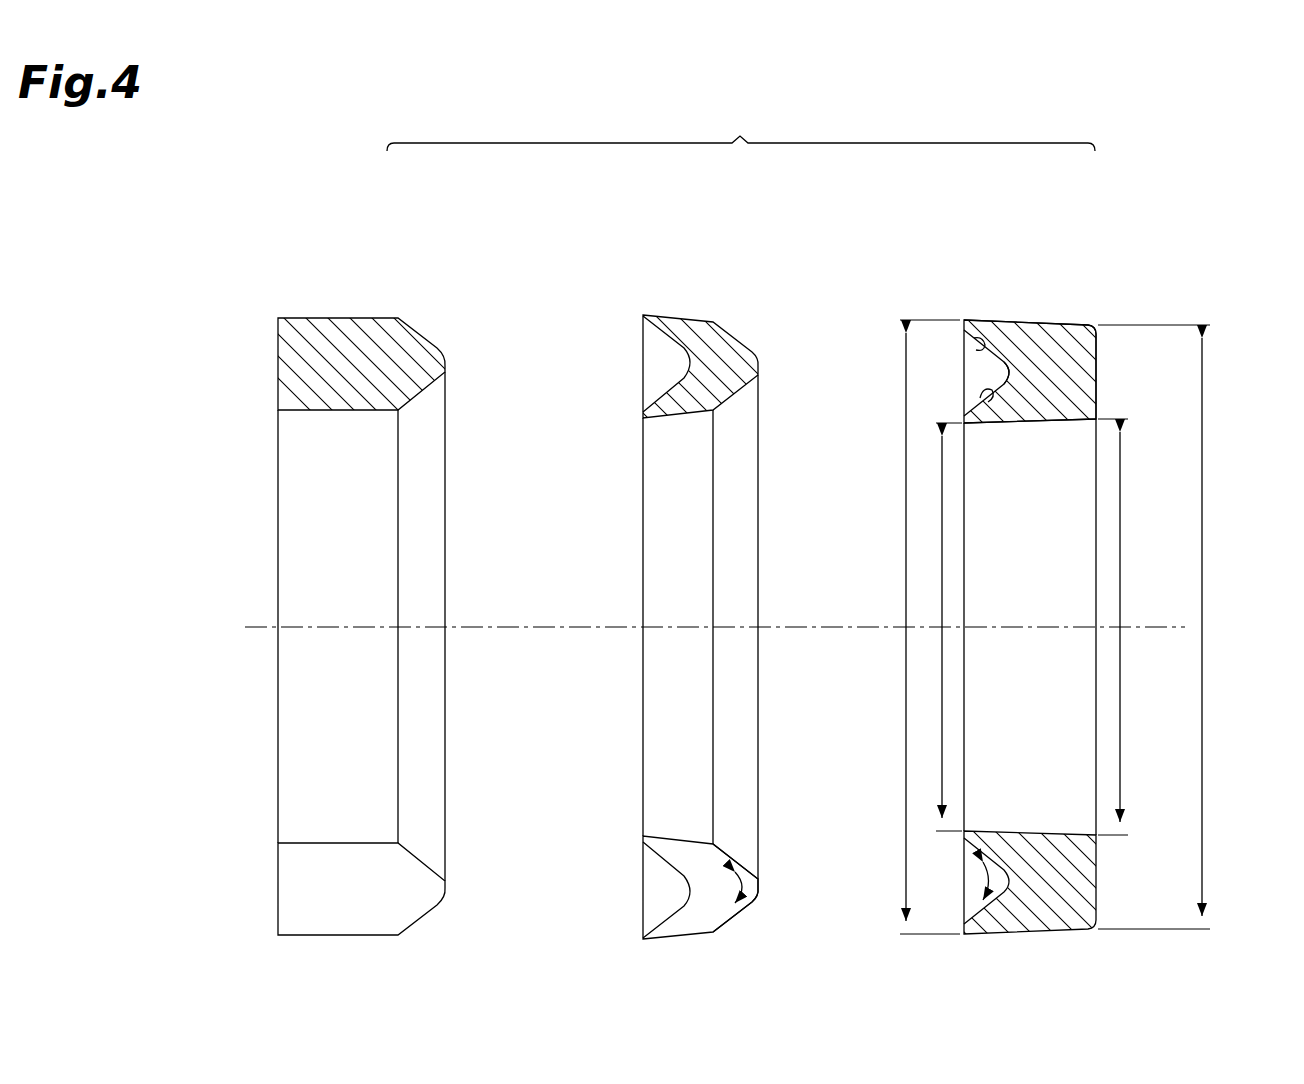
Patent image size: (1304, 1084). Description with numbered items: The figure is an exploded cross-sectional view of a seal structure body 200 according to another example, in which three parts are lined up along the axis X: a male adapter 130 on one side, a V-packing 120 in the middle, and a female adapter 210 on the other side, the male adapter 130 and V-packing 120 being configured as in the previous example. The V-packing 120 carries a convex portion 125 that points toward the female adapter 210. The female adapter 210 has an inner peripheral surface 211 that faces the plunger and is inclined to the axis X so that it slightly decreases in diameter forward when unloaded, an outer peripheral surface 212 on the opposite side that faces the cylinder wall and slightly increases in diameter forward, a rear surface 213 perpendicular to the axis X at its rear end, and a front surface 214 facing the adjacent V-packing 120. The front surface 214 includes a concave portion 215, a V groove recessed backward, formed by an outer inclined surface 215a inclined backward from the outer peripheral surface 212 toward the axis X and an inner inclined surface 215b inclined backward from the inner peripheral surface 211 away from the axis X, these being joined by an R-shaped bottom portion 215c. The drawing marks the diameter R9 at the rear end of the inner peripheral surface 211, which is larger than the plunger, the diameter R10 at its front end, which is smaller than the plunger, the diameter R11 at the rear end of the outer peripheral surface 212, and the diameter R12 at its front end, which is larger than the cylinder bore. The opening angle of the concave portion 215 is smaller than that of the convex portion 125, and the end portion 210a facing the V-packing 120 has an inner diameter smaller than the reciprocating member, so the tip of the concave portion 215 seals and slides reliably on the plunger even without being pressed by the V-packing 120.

The seal structure body 200 is at (741, 130).
The male adapter 130 is at (394, 222).
The V-packing 120 is at (728, 222).
The convex portion 125 is at (740, 832).
The female adapter 210 is at (1051, 218).
The end portion 210a is at (966, 830).
The inner peripheral surface 211 is at (1060, 421).
The outer peripheral surface 212 is at (1059, 325).
The rear surface 213 is at (1100, 360).
The front surface 214 is at (988, 373).
The concave portion 215 is at (988, 373).
The outer inclined surface 215a is at (984, 346).
The inner inclined surface 215b is at (1005, 392).
The R-shaped bottom portion 215c is at (1002, 382).
The axis X is at (540, 630).
The diameter of the rear end of the inner peripheral surface R9 is at (1122, 565).
The diameter of the front end of the inner peripheral surface R10 is at (944, 565).
The diameter of the rear end of the outer peripheral surface R11 is at (1204, 580).
The diameter of the front end of the outer peripheral surface R12 is at (905, 575).